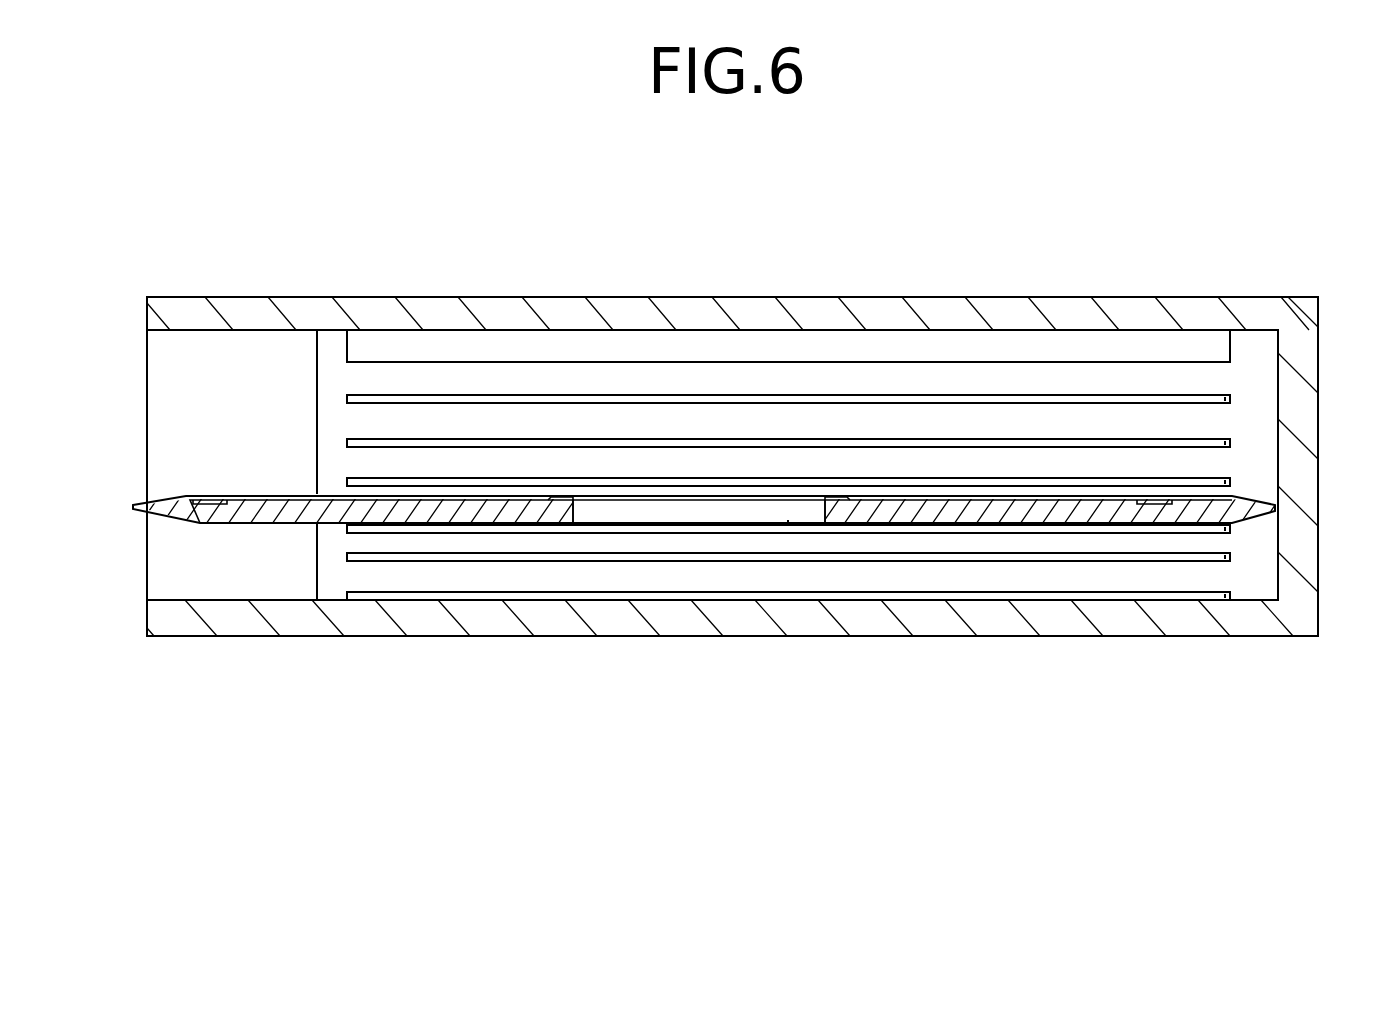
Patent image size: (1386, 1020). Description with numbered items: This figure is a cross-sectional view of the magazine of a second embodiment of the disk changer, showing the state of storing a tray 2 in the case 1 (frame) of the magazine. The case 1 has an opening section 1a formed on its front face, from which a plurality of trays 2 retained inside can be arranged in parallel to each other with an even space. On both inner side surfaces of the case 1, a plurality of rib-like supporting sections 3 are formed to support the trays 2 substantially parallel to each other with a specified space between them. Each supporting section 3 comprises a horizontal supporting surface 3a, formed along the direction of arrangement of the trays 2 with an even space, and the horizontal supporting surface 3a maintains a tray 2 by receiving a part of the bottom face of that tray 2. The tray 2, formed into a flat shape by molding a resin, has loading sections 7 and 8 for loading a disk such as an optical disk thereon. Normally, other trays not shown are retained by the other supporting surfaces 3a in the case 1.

The case 1 is at (750, 308).
The opening section 1a is at (147, 455).
The tray 2 is at (200, 523).
The supporting section 3 is at (1228, 397).
The horizontal supporting surface 3a is at (787, 523).
The loading section 7 is at (558, 500).
The loading section 8 is at (208, 497).